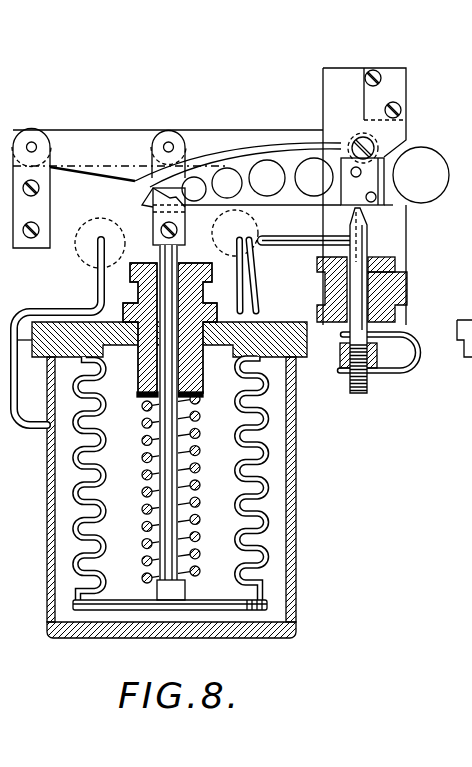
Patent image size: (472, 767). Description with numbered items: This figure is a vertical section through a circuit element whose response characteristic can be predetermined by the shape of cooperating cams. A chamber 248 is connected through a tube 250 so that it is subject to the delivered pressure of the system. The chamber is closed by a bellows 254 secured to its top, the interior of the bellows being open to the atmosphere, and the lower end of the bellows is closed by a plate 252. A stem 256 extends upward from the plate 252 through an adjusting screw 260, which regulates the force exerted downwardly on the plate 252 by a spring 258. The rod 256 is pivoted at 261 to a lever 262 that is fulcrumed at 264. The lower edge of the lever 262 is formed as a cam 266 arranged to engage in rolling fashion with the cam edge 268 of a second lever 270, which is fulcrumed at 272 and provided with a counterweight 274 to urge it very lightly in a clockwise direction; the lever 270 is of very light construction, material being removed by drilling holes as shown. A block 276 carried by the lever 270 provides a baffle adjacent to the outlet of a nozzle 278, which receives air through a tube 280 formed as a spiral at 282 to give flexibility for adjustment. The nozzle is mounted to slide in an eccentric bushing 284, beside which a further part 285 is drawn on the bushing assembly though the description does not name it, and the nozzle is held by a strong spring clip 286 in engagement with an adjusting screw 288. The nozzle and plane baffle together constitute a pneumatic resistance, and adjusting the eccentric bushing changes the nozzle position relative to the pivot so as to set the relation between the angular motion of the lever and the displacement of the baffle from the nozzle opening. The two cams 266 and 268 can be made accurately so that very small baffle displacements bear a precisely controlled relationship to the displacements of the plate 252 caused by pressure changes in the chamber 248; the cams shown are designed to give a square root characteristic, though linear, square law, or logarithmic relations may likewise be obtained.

The chamber 248 is at (275, 445).
The tube 250 is at (57, 310).
The plate 252 is at (232, 605).
The bellows 254 is at (270, 513).
The stem 256 is at (170, 463).
The spring 258 is at (197, 535).
The adjusting screw 260 is at (192, 378).
The pivot 261 is at (166, 141).
The lever 262 is at (93, 129).
The fulcrum 264 is at (31, 141).
The cam 266 is at (218, 152).
The cam edge 268 is at (236, 155).
The second lever 270 is at (283, 204).
The fulcrum 272 is at (356, 137).
The counterweight 274 is at (428, 152).
The block 276 is at (369, 183).
The nozzle 278 is at (368, 243).
The tube 280 is at (281, 247).
The spiral 282 is at (261, 297).
The eccentric bushing 284 is at (380, 293).
The valve seat 285 is at (394, 275).
The spring clip 286 is at (408, 372).
The adjusting screw 288 is at (360, 393).